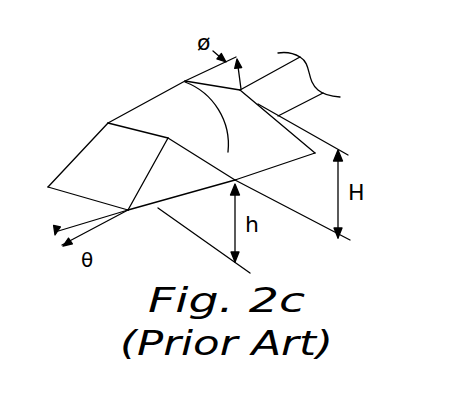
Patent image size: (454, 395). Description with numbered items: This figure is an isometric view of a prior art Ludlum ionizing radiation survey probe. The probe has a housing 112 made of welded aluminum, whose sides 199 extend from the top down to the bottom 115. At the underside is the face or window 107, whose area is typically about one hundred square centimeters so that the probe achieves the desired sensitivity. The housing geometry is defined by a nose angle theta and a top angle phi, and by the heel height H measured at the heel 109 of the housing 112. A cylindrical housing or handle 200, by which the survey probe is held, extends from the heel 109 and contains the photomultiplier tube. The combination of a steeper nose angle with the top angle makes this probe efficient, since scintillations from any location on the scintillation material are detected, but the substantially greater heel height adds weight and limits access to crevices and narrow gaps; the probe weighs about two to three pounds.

The housing 112 is at (113, 100).
The sides 199 is at (185, 81).
The cylindrical housing or handle 200 is at (250, 83).
The heel 109 is at (308, 115).
The bottom 115 is at (255, 181).
The face or window 107 is at (167, 228).